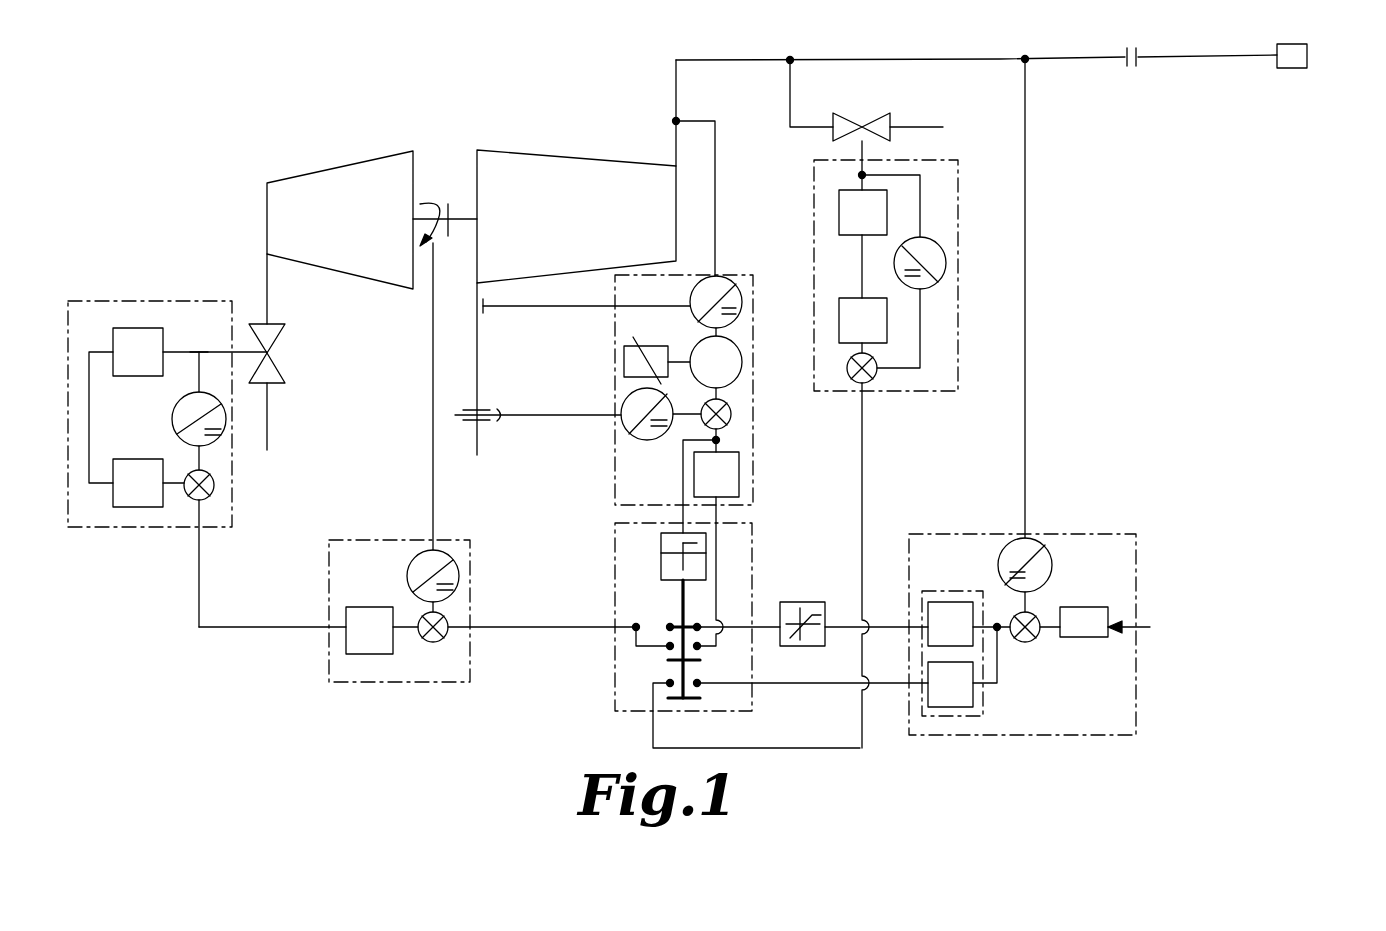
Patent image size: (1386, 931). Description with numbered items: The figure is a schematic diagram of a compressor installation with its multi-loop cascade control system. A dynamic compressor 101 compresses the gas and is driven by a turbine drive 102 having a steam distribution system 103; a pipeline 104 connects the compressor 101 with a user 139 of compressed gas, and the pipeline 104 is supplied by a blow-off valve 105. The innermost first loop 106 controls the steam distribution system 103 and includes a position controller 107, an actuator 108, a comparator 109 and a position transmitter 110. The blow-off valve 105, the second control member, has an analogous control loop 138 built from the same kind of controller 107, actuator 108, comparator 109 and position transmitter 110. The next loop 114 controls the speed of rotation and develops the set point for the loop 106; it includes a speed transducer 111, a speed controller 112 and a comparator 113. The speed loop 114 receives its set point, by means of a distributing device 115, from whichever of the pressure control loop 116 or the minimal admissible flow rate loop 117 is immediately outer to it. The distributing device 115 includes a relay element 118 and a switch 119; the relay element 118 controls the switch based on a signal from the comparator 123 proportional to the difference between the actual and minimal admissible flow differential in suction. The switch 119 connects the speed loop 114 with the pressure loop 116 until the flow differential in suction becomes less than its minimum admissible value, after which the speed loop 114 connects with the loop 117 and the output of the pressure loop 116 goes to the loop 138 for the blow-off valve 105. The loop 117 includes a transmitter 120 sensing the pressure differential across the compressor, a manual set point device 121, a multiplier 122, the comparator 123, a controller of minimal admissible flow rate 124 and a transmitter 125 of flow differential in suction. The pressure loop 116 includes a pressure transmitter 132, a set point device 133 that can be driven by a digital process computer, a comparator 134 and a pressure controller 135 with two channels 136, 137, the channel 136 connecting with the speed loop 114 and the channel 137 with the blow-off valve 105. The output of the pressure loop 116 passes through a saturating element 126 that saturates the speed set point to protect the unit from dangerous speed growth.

The dynamic compressor 101 is at (576, 302).
The turbine drive 102 is at (372, 220).
The steam distribution system 103 is at (283, 331).
The pipeline 104 is at (880, 60).
The blow-off valve 105 is at (848, 110).
The first loop 106 is at (133, 300).
The position controller 107 is at (500, 402).
The actuator 108 is at (500, 283).
The comparator 109 is at (214, 487).
The position transmitter 110 is at (172, 419).
The speed transducer 111 is at (407, 572).
The speed controller 112 is at (369, 630).
The comparator 113 is at (441, 641).
The speed control loop 114 is at (340, 540).
The distributing device 115 is at (615, 557).
The pressure control loop 116 is at (955, 534).
The control loop of minimal admissible flow rate 117 is at (735, 276).
The relay element 118 is at (661, 560).
The switch 119 is at (678, 622).
The transmitter 120 is at (690, 296).
The manual set point device 121 is at (668, 325).
The multiplier 122 is at (716, 362).
The comparator 123 is at (731, 414).
The controller of minimal admissible flow rate 124 is at (716, 474).
The transmitter of flow differential in suction 125 is at (627, 434).
The saturating element 126 is at (800, 602).
The pressure transmitter 132 is at (1052, 560).
The set point device 133 is at (1080, 607).
The comparator 134 is at (1033, 640).
The pressure controller 135 is at (935, 591).
The channel 136 is at (950, 624).
The channel 137 is at (950, 684).
The control loop 138 is at (958, 180).
The user 139 is at (1307, 55).